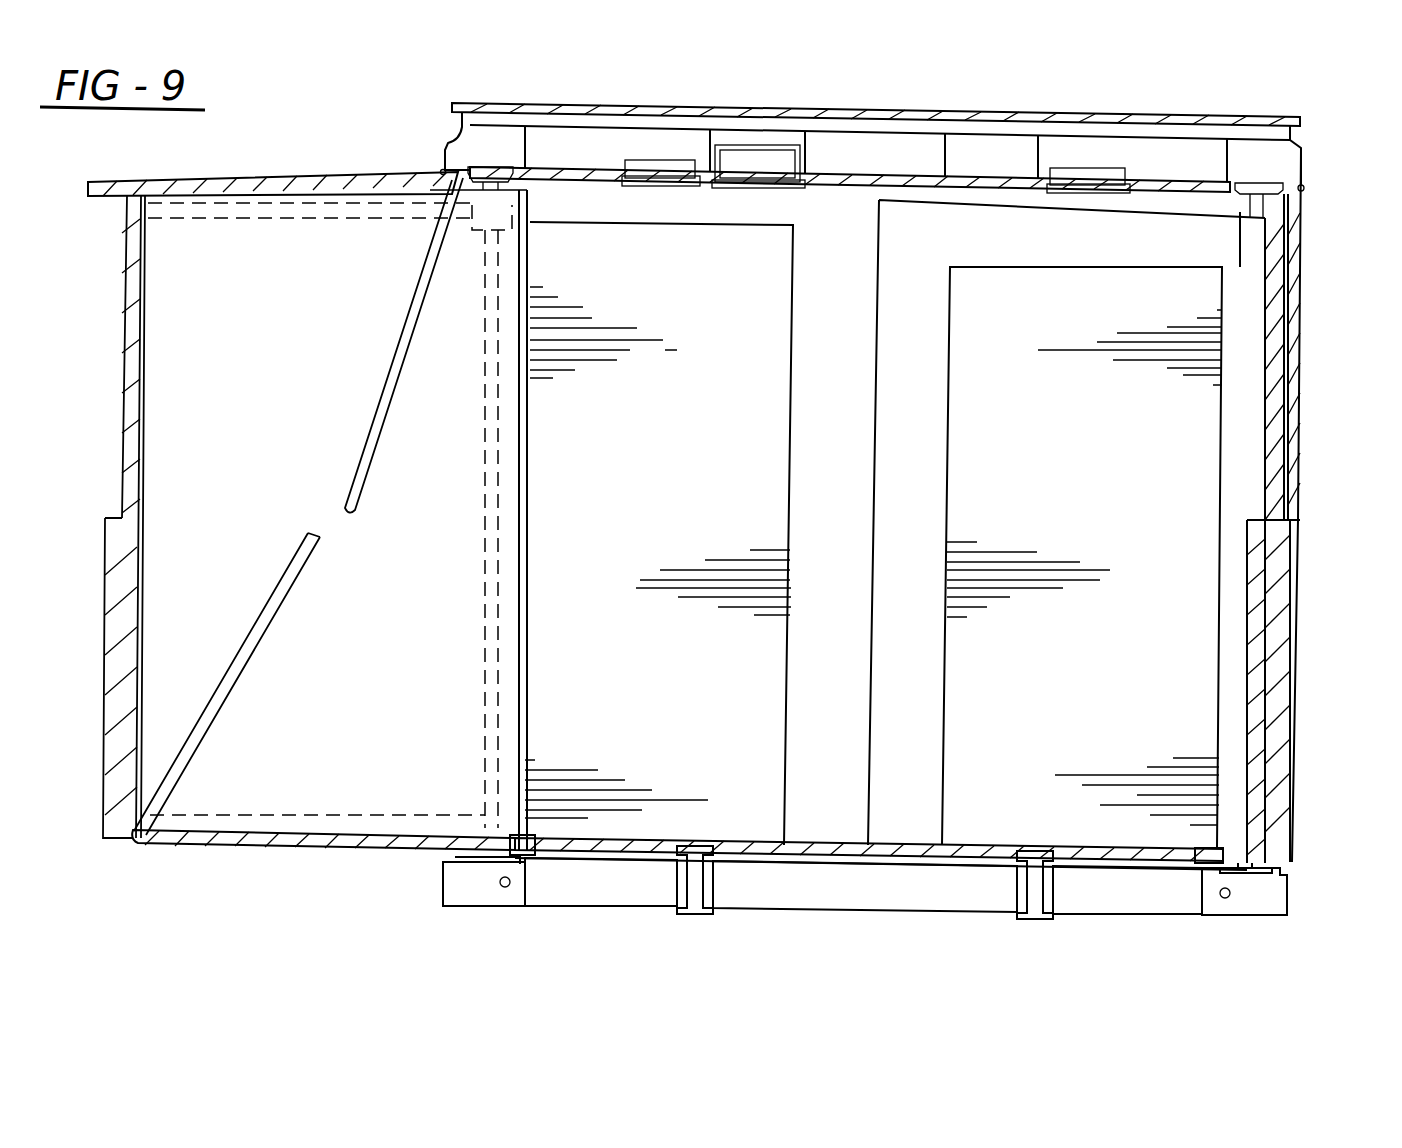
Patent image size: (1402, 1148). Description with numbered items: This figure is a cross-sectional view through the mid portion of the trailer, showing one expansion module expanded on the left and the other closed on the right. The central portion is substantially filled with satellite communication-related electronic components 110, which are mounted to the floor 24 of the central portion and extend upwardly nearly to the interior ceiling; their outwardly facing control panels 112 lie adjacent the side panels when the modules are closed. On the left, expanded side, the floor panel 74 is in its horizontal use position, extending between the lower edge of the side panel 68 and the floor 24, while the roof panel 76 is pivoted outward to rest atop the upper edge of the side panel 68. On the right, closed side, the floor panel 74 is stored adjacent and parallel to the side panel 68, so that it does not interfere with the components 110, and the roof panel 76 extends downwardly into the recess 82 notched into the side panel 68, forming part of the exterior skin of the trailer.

The floor 24 is at (817, 842).
The side panel 68 is at (1282, 610).
The floor panel 74 is at (1256, 736).
The roof panel 76 is at (1290, 368).
The recess 82 is at (1300, 489).
The satellite communication-related electronic components 110 is at (767, 286).
The control panels 112 is at (518, 471).